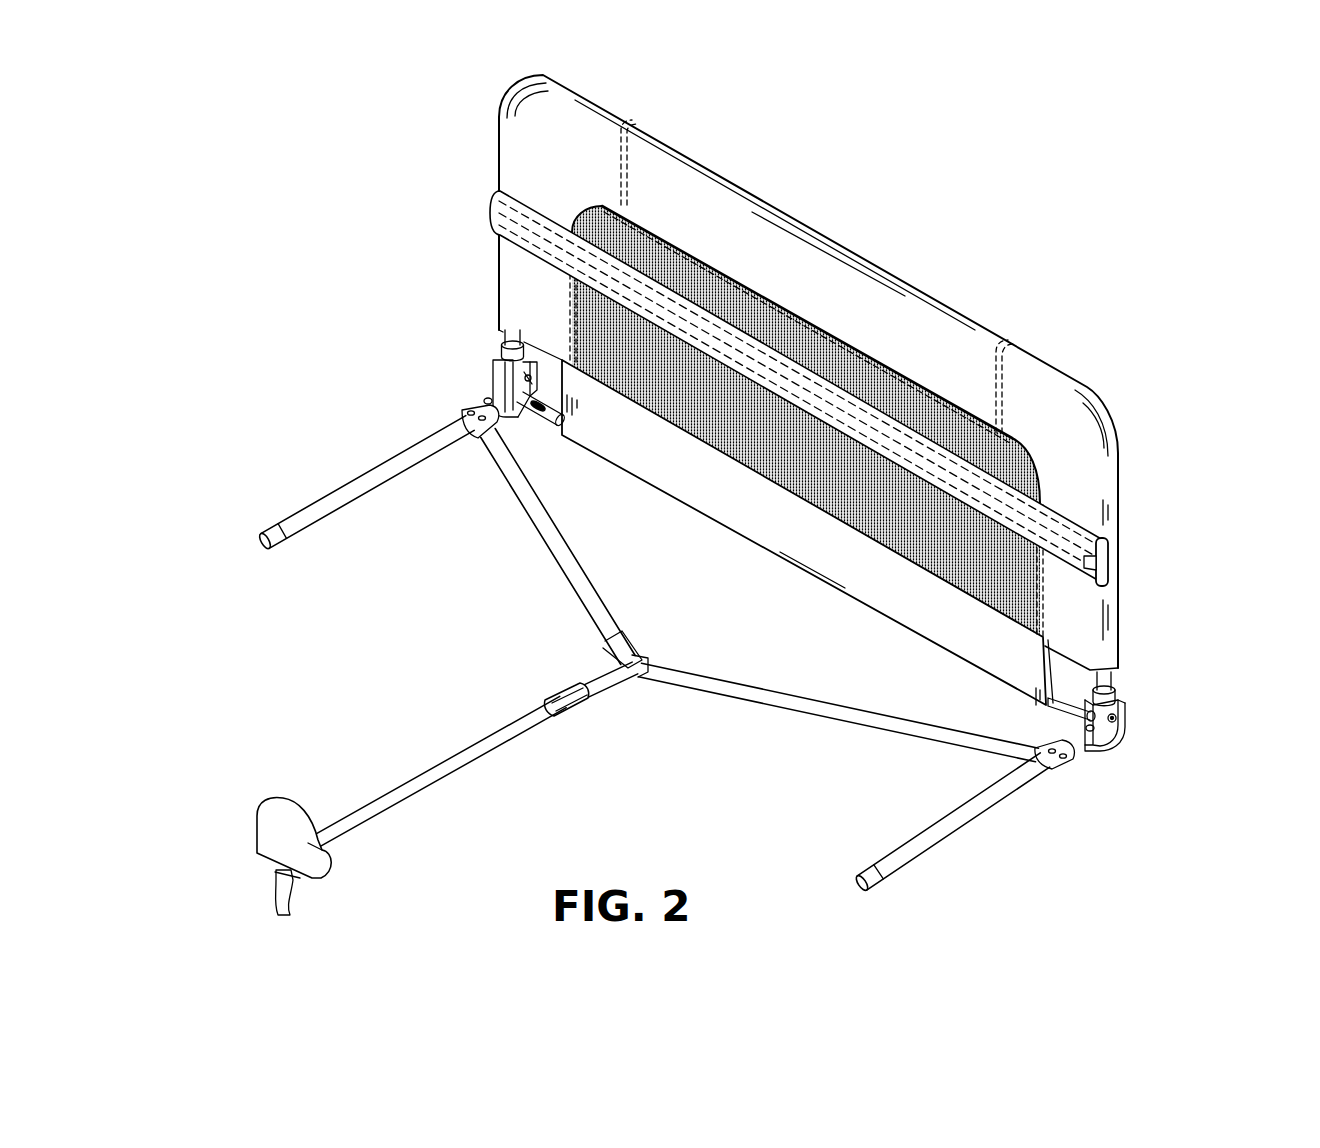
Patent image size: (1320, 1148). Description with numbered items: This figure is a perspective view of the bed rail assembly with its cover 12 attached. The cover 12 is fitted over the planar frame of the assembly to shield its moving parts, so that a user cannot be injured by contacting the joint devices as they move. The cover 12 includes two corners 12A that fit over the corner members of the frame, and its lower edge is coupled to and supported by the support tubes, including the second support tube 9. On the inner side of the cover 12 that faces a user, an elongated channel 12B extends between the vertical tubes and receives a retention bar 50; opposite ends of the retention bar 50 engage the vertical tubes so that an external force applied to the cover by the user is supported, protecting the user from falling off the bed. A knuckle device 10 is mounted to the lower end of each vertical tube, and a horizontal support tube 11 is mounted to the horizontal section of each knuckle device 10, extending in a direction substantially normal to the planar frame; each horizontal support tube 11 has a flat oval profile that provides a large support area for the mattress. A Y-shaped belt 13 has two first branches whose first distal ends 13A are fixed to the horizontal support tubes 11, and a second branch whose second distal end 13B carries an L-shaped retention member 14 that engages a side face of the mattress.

The second support tube 9 is at (1068, 720).
The knuckle device 10 is at (487, 367).
The horizontal support tube 11 is at (357, 488).
The cover 12 is at (1047, 392).
The corners 12A is at (507, 93).
The elongated channel 12B is at (1045, 514).
The Y-shaped belt 13 is at (640, 658).
The first distal ends 13A is at (467, 417).
The second distal end 13B is at (551, 689).
The L-shaped retention member 14 is at (280, 817).
The retention bar 50 is at (1105, 546).